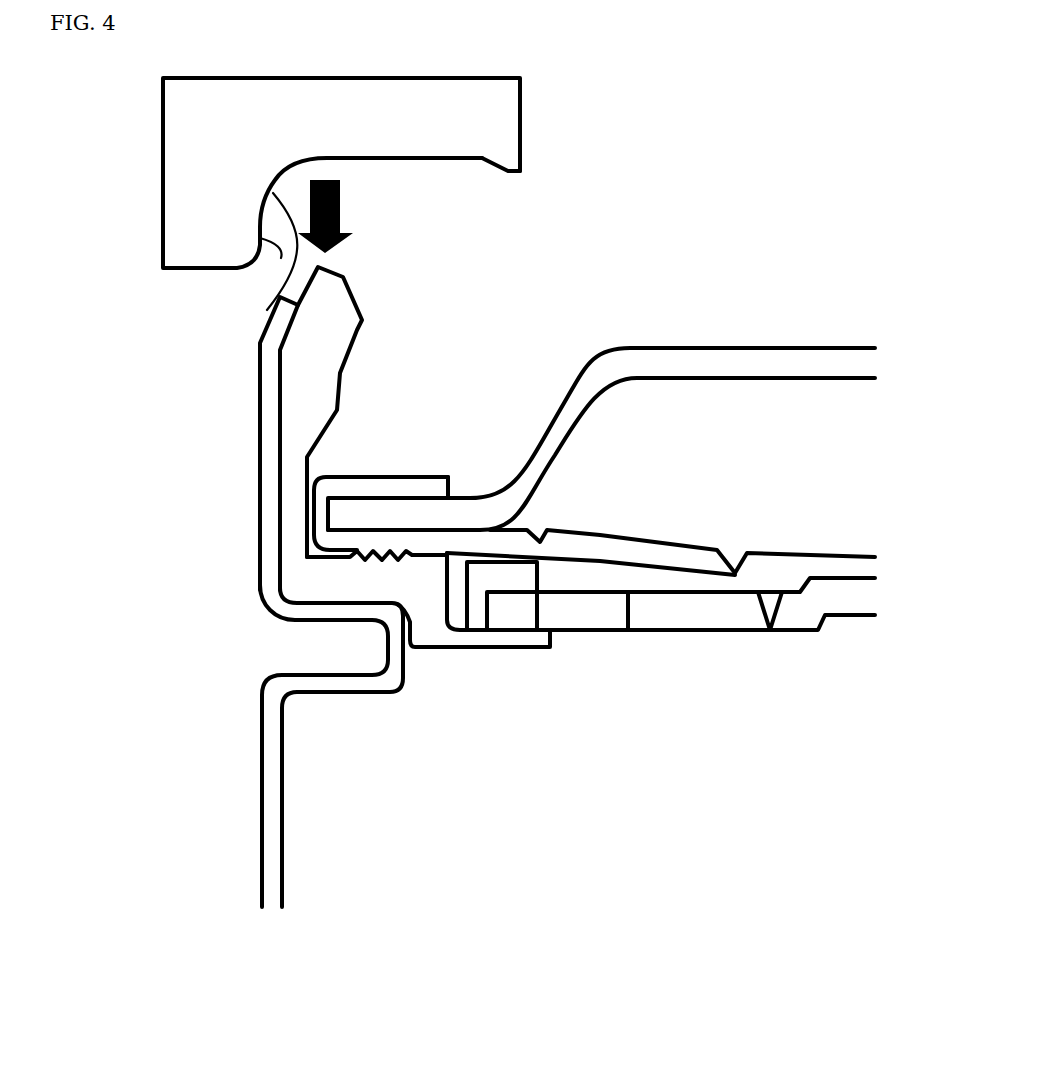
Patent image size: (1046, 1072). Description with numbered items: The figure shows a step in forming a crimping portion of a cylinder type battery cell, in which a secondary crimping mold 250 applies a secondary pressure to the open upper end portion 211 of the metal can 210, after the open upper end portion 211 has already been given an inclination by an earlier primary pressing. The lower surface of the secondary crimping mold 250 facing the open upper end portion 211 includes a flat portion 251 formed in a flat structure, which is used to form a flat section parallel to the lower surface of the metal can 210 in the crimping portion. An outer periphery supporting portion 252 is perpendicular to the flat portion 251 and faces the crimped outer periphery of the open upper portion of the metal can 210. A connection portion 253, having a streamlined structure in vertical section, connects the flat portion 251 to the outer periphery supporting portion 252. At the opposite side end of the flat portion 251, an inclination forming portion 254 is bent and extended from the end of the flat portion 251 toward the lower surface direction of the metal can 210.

The secondary crimping mold 250 is at (195, 150).
The flat portion 251 is at (410, 160).
The outer periphery supporting portion 252 is at (281, 258).
The connection portion 253 is at (287, 299).
The inclination forming portion 254 is at (500, 168).
The open upper end portion 211 is at (267, 310).
The metal can 210 is at (263, 765).